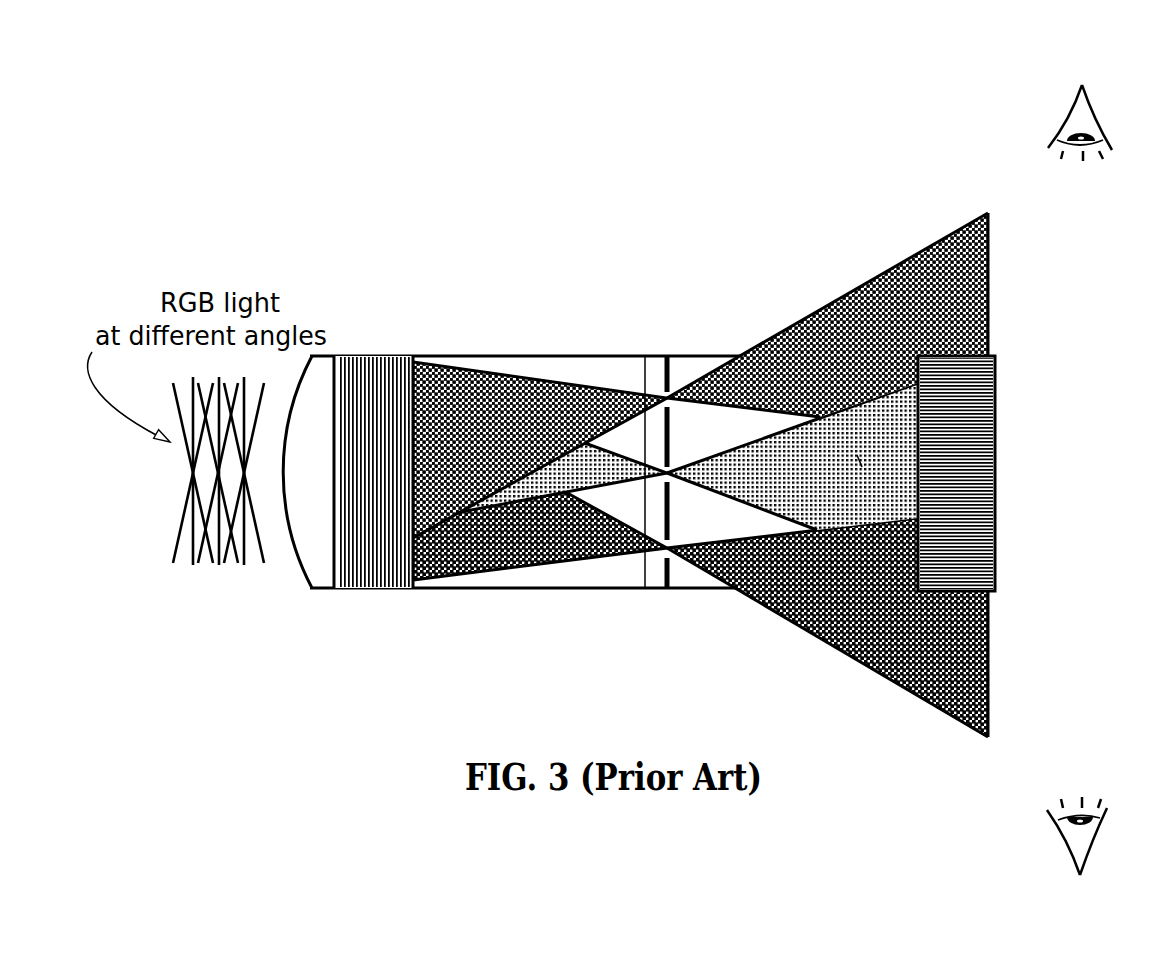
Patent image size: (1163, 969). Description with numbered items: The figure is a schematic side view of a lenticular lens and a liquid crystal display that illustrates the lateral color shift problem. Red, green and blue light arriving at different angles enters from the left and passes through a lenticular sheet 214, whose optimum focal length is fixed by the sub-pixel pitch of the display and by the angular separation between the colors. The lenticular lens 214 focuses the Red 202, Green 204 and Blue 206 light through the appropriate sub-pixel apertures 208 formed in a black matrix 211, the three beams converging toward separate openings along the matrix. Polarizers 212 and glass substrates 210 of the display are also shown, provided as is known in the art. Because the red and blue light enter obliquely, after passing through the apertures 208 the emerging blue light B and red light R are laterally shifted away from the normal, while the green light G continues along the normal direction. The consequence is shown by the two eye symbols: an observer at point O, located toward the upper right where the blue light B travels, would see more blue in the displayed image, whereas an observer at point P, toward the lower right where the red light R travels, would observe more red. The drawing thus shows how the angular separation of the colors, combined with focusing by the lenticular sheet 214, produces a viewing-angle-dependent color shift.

The Red light 202 is at (528, 375).
The Green light 204 is at (775, 433).
The Blue light 206 is at (515, 572).
The apertures 208 is at (667, 394).
The glass substrates 210 is at (693, 588).
The black matrix 211 is at (669, 356).
The polarizers 212 is at (398, 356).
The lenticular sheet 214 is at (312, 580).
The blue light B is at (990, 297).
The green light G is at (860, 462).
The red light R is at (989, 657).
The observer point O is at (1084, 76).
The observer point P is at (1098, 838).